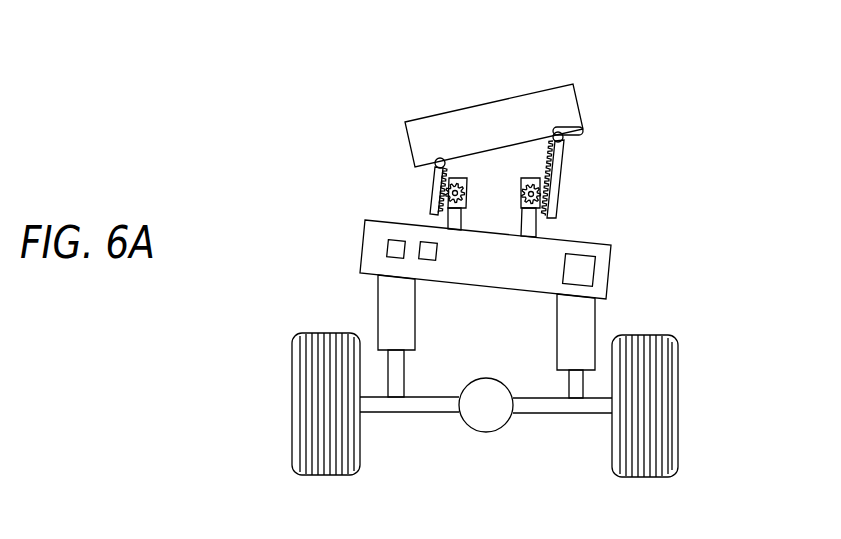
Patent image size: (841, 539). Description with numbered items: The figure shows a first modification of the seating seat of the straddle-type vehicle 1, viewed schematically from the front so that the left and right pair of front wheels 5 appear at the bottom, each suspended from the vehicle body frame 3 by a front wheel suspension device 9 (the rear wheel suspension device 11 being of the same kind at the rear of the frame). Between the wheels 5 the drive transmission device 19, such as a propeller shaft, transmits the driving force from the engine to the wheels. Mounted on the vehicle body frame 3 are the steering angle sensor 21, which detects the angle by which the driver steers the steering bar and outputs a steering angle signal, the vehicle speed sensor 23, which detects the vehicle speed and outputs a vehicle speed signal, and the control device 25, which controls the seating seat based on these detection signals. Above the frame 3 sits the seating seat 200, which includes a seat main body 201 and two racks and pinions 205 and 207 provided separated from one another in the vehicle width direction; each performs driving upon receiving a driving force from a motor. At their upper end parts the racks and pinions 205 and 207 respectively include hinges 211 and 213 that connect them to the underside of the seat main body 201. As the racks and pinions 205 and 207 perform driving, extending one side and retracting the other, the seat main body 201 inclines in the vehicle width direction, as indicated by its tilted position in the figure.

The straddle-type vehicle 1 is at (336, 96).
The seating seat 200 is at (570, 67).
The seat main body 201 is at (578, 98).
The hinge 211 is at (584, 130).
The hinge 213 is at (439, 158).
The rack and pinion 205 is at (563, 170).
The rack and pinion 207 is at (463, 216).
The vehicle body frame 3 is at (612, 252).
The steering angle sensor 21 is at (387, 251).
The vehicle speed sensor 23 is at (429, 262).
The control device 25 is at (594, 270).
The front wheel suspension device 9 is at (484, 336).
The rear wheel suspension device 11 is at (377, 308).
The drive transmission device 19 is at (487, 432).
The front wheels 5 is at (292, 410).